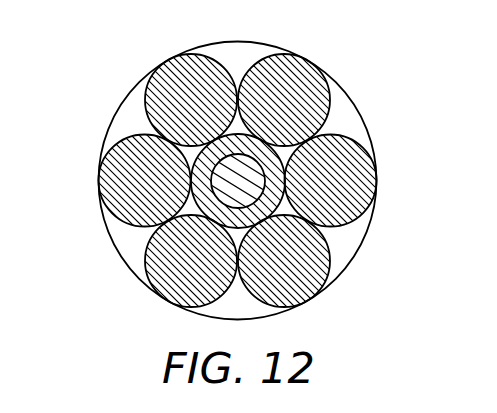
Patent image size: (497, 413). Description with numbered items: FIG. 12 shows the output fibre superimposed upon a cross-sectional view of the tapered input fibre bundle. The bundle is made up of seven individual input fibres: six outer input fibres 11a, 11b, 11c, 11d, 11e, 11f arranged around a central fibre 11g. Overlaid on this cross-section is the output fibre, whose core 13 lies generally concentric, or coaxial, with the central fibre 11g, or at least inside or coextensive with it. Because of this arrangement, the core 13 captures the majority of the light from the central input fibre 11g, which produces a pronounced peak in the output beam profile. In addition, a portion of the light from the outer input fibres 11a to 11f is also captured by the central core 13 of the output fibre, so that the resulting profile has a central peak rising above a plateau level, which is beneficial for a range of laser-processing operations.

The core 13 is at (135, 140).
The input fibre 11a is at (305, 68).
The input fibre 11b is at (370, 176).
The input fibre 11c is at (310, 293).
The input fibre 11d is at (163, 292).
The input fibre 11e is at (99, 178).
The input fibre 11f is at (168, 70).
The central fibre 11g is at (285, 167).